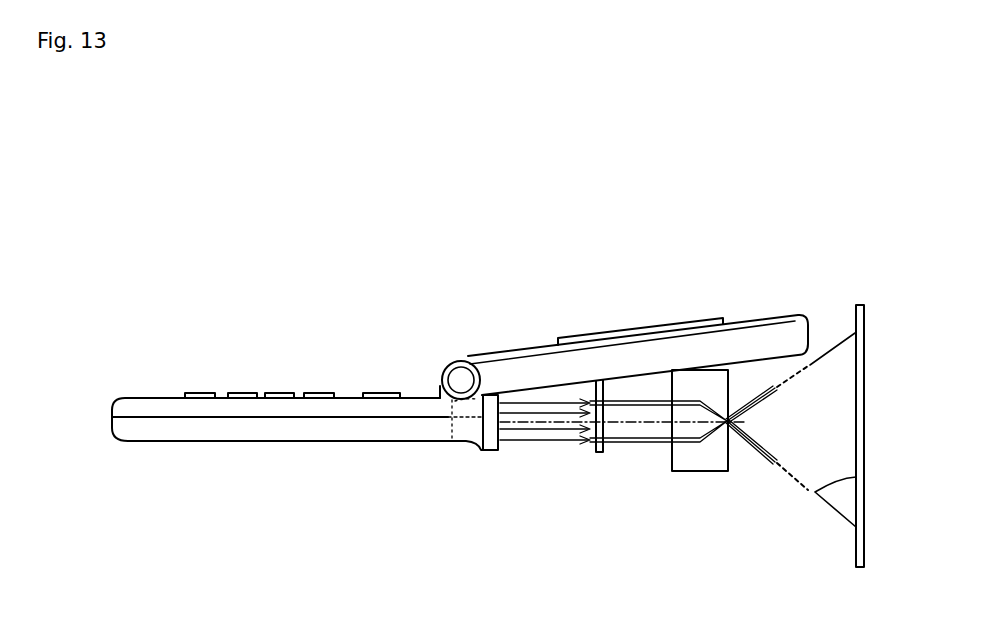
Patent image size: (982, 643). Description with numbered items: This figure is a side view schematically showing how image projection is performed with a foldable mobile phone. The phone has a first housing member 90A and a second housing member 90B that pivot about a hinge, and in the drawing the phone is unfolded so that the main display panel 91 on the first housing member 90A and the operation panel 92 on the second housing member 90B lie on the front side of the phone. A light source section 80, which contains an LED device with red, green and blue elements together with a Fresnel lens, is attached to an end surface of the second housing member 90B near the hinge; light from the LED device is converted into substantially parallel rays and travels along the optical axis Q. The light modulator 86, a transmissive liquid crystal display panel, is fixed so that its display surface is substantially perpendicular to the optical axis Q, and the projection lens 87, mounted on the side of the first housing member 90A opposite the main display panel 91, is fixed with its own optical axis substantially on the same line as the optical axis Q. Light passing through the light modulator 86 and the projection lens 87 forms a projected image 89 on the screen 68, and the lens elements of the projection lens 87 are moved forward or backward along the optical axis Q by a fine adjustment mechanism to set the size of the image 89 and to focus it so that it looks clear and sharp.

The first housing member 90A is at (767, 322).
The second housing member 90B is at (175, 427).
The main display panel 91 is at (602, 332).
The operation panel 92 is at (278, 393).
The light source section 80 is at (488, 452).
The light modulator 86 is at (600, 455).
The projection lens 87 is at (700, 462).
The projected image 89 is at (815, 492).
The screen 68 is at (857, 553).
The optical axis Q is at (628, 425).